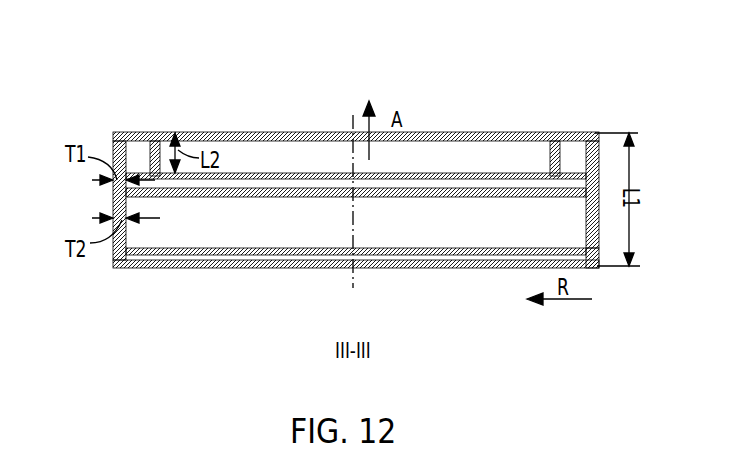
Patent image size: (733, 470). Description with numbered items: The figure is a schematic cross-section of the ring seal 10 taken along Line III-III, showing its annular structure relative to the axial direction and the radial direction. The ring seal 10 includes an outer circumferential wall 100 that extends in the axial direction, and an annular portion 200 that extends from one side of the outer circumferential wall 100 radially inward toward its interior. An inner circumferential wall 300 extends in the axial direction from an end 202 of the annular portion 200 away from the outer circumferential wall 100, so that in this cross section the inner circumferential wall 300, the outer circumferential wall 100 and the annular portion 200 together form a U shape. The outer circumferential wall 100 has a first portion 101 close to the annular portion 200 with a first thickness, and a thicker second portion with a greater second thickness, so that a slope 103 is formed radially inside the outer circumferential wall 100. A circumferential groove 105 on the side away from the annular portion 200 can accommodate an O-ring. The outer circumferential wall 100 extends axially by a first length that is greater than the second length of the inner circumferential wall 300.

The ring seal 10 is at (488, 83).
The outer circumferential wall 100 is at (588, 243).
The first portion 101 is at (120, 150).
The slope 103 is at (587, 192).
The circumferential groove 105 is at (597, 255).
The annular portion 200 is at (130, 142).
The end of the annular portion 202 is at (553, 133).
The inner circumferential wall 300 is at (157, 158).